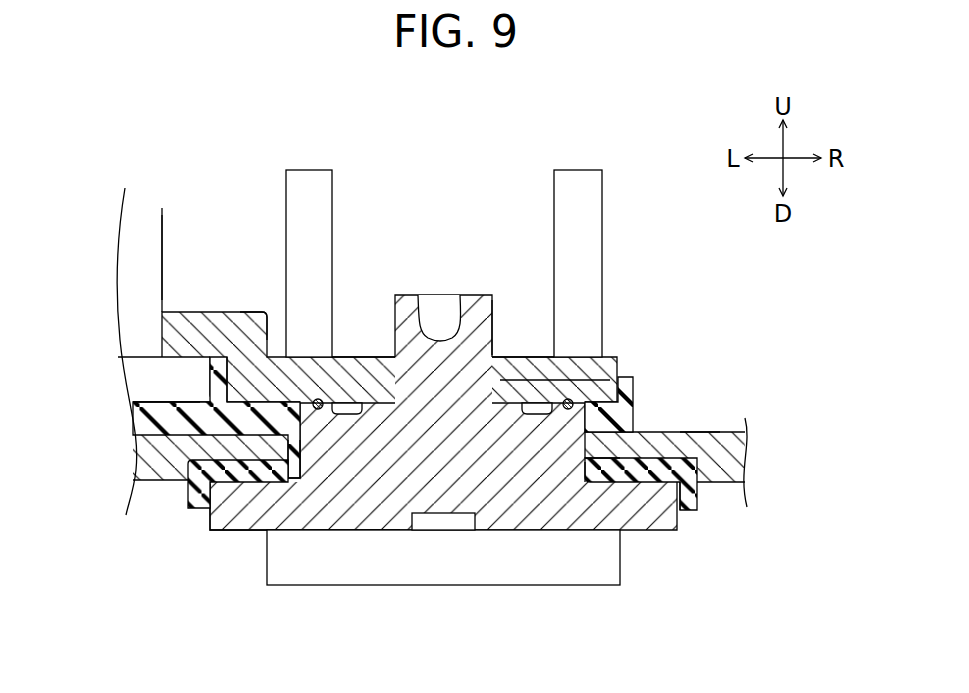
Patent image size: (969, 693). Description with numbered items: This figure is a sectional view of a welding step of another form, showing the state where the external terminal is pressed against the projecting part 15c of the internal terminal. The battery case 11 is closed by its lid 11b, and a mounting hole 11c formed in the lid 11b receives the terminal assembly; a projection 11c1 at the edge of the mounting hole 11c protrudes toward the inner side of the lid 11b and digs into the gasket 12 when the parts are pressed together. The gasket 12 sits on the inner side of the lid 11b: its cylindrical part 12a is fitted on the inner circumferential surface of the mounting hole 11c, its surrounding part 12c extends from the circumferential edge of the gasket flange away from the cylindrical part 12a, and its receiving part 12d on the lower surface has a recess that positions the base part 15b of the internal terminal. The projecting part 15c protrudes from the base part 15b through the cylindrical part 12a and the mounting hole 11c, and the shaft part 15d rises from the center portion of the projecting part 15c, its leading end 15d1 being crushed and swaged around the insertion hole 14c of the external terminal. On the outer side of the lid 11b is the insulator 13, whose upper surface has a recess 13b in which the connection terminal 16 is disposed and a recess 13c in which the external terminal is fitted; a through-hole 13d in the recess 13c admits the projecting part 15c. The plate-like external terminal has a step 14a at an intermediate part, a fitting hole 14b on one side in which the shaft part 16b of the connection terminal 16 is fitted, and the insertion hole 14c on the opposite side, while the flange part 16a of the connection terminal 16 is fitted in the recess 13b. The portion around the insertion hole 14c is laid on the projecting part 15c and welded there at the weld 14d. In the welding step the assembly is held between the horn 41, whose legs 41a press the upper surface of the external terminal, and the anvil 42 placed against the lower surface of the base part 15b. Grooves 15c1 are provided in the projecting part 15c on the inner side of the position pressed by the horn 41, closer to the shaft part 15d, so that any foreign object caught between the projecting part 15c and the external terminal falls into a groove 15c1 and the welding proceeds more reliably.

The battery case 11 is at (729, 424).
The lid 11b is at (693, 432).
The mounting hole 11c is at (586, 470).
The projection 11c1 is at (603, 470).
The gasket 12 is at (709, 503).
The cylindrical part 12a is at (600, 460).
The surrounding part 12c is at (200, 510).
The receiving part 12d is at (233, 510).
The insulator 13 is at (652, 384).
The recess 13b is at (160, 400).
The recess 13c is at (250, 392).
The through-hole 13d is at (295, 480).
The step 14a is at (267, 302).
The fitting hole 14b is at (162, 312).
The insertion hole 14c is at (395, 322).
The weld 14d is at (346, 418).
The base part 15b is at (292, 480).
The projecting part 15c is at (540, 372).
The grooves 15c1 is at (318, 412).
The shaft part 15d is at (492, 320).
The leading end 15d1 is at (479, 293).
The connection terminal 16 is at (159, 187).
The flange part 16a is at (140, 357).
The shaft part 16b is at (163, 232).
The horn 41 is at (286, 218).
The legs 41a is at (326, 365).
The anvil 42 is at (456, 587).